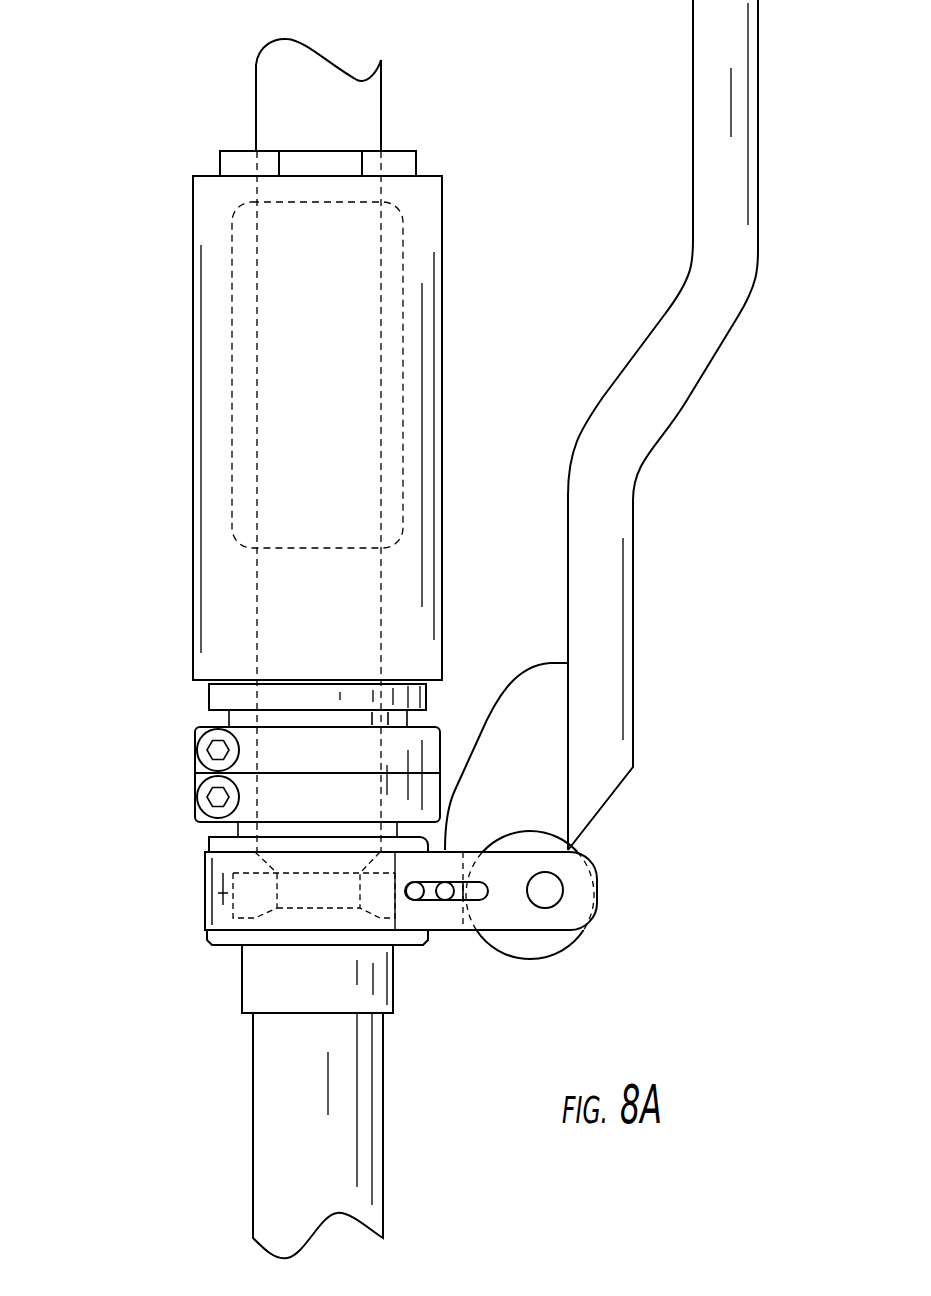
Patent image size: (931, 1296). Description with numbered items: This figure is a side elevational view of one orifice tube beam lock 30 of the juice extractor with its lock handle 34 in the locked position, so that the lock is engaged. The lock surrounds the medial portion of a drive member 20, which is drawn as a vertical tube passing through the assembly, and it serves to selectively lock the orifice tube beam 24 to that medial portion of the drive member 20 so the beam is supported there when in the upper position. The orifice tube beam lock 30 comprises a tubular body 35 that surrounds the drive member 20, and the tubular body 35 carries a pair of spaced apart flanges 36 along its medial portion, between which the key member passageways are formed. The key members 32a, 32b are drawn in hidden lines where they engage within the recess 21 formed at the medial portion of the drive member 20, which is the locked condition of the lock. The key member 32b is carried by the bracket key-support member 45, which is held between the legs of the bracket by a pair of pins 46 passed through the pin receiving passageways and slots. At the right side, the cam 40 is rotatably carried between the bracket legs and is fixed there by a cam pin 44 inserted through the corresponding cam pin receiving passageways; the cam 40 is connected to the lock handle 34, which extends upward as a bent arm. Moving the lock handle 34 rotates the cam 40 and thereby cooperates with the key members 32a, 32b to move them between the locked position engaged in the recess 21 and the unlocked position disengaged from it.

The drive member 20 is at (381, 122).
The orifice tube beam 24 is at (403, 297).
The spaced apart flanges 36 is at (205, 836).
The tubular body 35 is at (205, 848).
The orifice tube beam lock 30 is at (190, 843).
The key member 32a is at (205, 892).
The recess 21 is at (220, 943).
The key member 32b is at (430, 930).
The bracket key-support member 45 is at (437, 930).
The pins 46 is at (420, 900).
The cam 40 is at (540, 957).
The cam pin 44 is at (563, 890).
The lock handle 34 is at (758, 268).